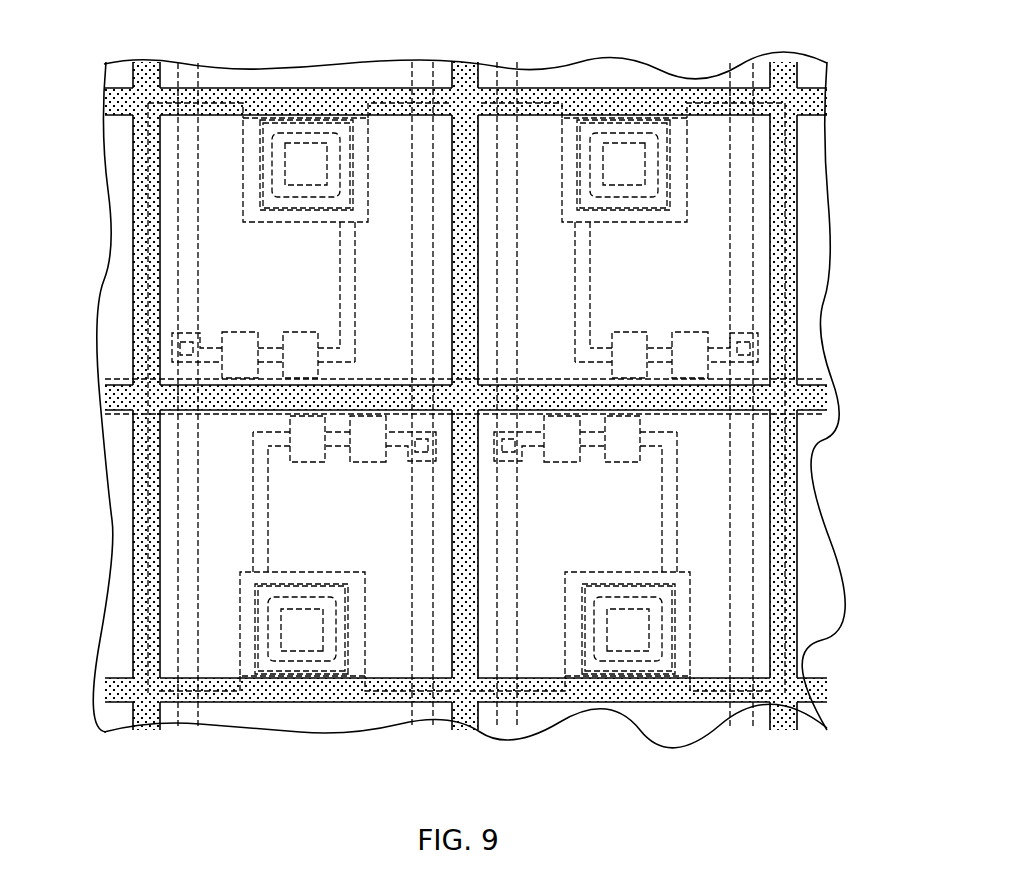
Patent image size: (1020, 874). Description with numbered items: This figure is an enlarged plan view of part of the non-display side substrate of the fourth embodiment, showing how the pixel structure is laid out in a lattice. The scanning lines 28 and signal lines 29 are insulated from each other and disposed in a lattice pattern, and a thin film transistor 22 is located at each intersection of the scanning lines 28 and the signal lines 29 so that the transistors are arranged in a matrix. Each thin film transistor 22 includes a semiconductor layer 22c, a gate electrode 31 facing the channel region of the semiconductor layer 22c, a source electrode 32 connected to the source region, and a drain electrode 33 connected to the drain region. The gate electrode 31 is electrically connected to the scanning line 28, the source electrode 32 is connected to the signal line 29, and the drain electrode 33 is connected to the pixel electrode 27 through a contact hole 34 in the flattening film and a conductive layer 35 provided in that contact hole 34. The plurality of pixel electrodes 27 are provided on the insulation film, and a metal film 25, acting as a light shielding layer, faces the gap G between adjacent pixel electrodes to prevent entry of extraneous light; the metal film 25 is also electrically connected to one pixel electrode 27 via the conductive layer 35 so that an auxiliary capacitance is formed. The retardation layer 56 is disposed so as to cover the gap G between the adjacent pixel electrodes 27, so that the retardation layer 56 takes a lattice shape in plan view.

The thin film transistor 22 is at (241, 485).
The semiconductor layer 22c is at (255, 460).
The metal film 25 is at (548, 694).
The pixel electrode 27 is at (384, 114).
The scanning line 28 is at (812, 381).
The signal line 29 is at (198, 84).
The gate electrode 31 is at (360, 463).
The source electrode 32 is at (405, 462).
The drain electrode 33 is at (257, 670).
The contact hole 34 is at (300, 650).
The conductive layer 35 is at (330, 672).
The retardation layer 56 is at (800, 78).
The gap G is at (298, 95).